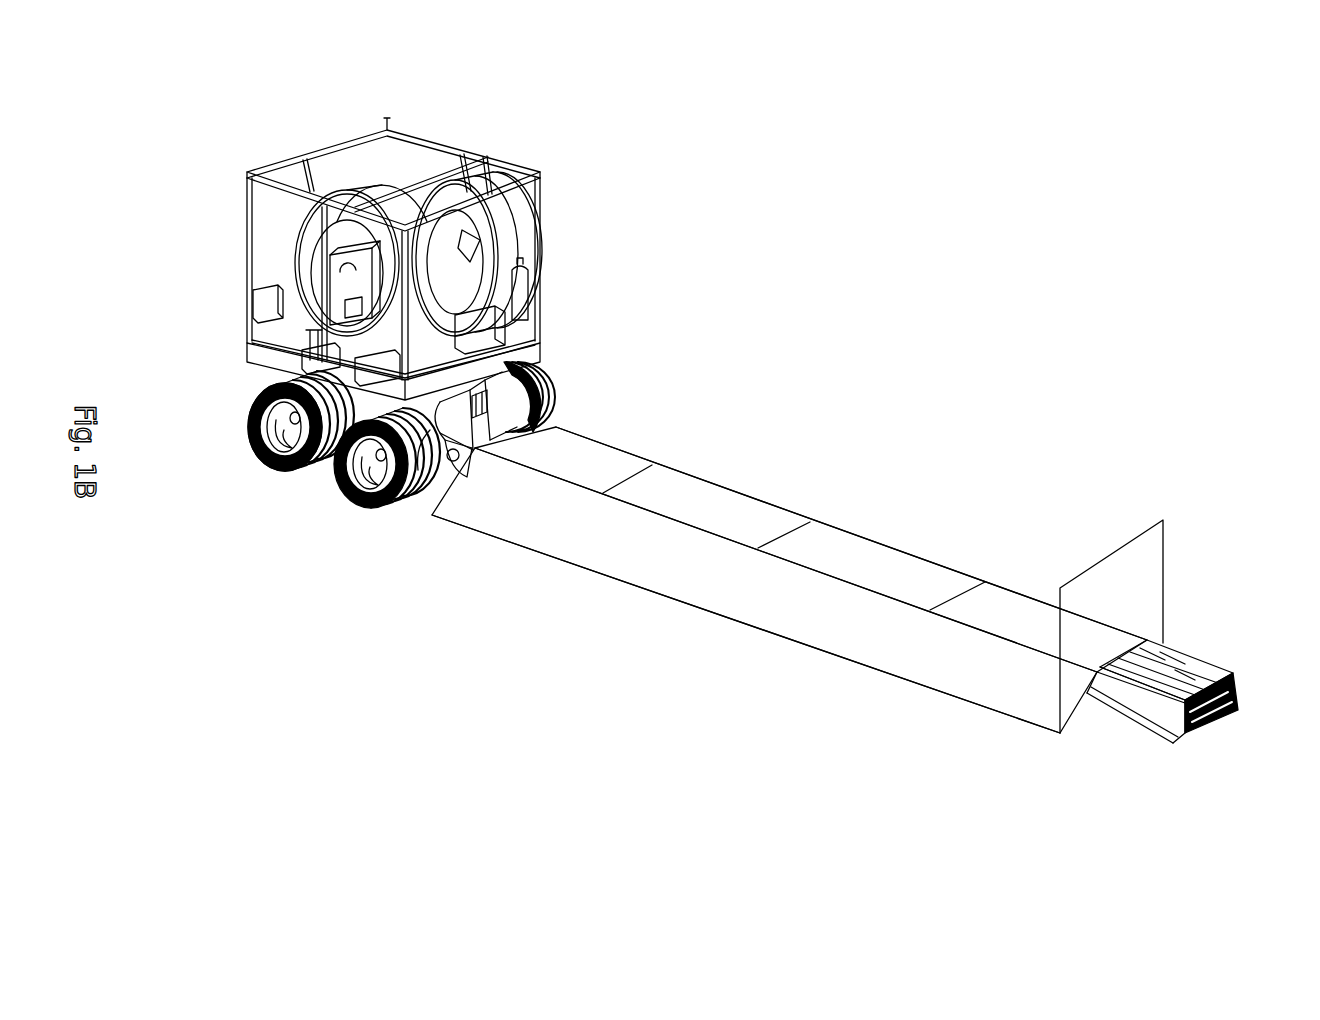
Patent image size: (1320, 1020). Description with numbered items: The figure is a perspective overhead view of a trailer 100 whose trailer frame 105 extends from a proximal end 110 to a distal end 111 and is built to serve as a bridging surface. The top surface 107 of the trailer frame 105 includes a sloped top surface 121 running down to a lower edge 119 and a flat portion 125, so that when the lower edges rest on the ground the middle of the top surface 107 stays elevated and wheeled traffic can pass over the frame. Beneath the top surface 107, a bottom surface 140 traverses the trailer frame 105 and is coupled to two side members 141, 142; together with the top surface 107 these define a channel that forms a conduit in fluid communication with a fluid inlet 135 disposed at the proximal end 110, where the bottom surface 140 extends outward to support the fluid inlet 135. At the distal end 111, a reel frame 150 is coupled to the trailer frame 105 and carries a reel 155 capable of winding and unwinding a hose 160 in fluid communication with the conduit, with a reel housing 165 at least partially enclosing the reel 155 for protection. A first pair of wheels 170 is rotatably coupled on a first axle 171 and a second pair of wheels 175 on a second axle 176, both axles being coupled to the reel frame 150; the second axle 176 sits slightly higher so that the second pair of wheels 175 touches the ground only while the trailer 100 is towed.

The trailer 100 is at (998, 197).
The trailer frame 105 is at (860, 452).
The top surface 107 is at (1115, 552).
The proximal end 110 is at (1073, 718).
The distal end 111 is at (435, 504).
The lower edge 119 is at (745, 627).
The sloped top surface 121 is at (678, 568).
The flat portion 125 is at (712, 495).
The fluid inlet 135 is at (1198, 676).
The bottom surface 140 is at (1185, 740).
The side member 141 is at (1238, 692).
The side member 142 is at (1152, 702).
The reel frame 150 is at (540, 350).
The reel 155 is at (345, 300).
The hose 160 is at (307, 247).
The reel housing 165 is at (450, 140).
The first pair of wheels 170 is at (550, 386).
The first axle 171 is at (378, 457).
The second pair of wheels 175 is at (290, 480).
The second axle 176 is at (292, 420).